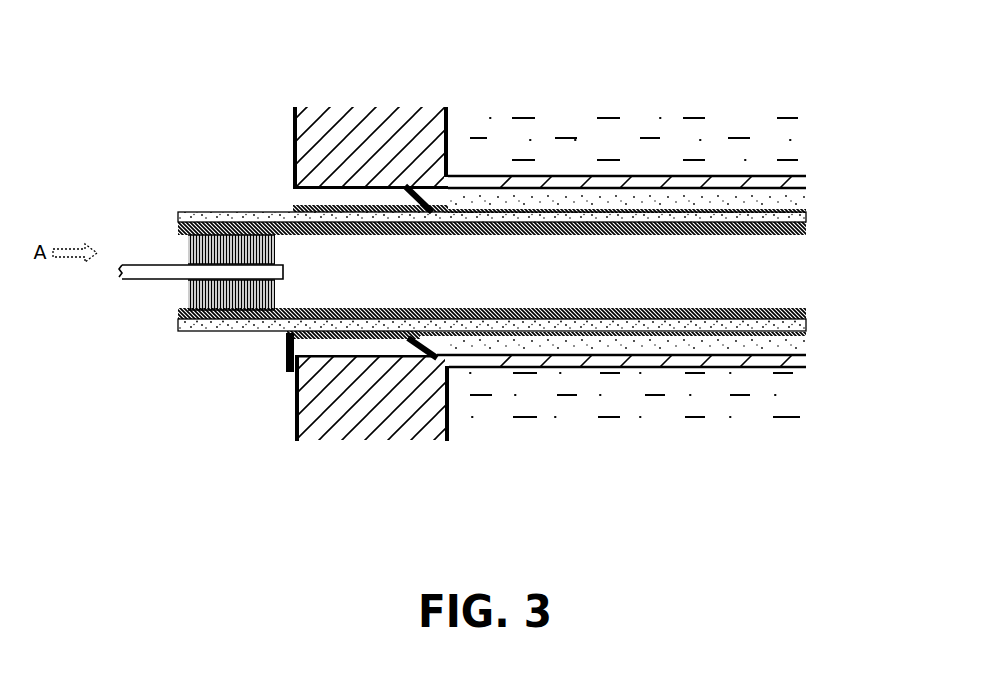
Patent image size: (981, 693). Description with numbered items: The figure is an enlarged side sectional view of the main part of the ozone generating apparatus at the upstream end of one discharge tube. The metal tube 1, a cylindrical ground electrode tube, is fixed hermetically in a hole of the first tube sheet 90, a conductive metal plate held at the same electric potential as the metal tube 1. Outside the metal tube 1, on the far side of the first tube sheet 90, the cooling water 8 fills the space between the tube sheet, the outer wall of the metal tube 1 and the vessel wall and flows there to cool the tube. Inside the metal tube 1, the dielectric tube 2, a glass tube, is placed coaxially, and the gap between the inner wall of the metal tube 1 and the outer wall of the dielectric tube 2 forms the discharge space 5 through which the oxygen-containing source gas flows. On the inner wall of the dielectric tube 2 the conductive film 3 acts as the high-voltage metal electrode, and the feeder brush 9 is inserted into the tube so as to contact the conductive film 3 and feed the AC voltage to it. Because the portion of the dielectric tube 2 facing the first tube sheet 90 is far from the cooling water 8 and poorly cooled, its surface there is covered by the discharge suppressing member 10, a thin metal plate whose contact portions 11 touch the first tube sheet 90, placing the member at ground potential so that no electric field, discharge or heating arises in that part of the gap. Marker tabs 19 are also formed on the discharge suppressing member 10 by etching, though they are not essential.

The metal tube 1 is at (613, 195).
The dielectric tube 2 is at (533, 207).
The conductive film 3 is at (483, 208).
The discharge space 5 is at (690, 195).
The cooling water 8 is at (773, 150).
The feeder brush 9 is at (182, 263).
The discharge suppressing member 10 is at (293, 204).
The contact portions 11 is at (412, 186).
The marker tabs 19 is at (288, 368).
The first tube sheet 90 is at (335, 130).